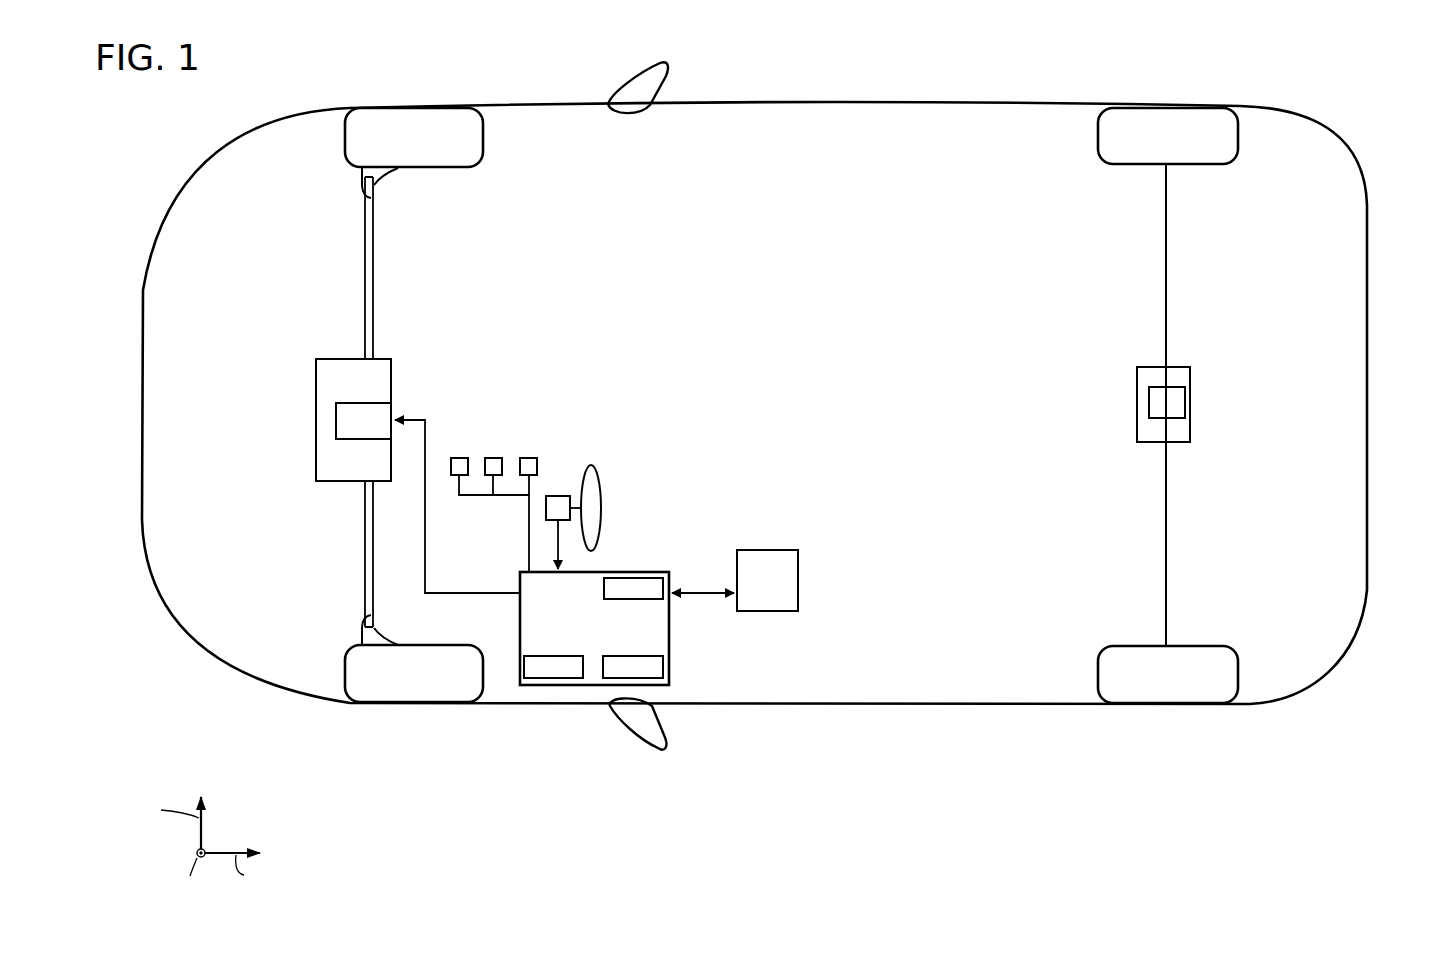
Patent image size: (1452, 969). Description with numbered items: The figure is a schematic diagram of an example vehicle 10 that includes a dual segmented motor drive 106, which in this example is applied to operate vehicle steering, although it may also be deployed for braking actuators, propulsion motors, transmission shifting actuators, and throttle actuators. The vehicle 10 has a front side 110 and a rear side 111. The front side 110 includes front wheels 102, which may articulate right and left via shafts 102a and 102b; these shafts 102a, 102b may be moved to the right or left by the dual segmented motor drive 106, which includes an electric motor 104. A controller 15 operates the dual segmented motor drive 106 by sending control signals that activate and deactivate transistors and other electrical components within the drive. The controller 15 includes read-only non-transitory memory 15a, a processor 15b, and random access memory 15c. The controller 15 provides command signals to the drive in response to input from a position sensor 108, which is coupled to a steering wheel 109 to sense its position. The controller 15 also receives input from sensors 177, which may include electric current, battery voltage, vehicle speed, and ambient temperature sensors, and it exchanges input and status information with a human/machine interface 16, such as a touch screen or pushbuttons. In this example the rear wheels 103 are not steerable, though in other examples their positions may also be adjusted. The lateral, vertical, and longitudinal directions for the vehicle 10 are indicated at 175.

The vehicle 10 is at (985, 105).
The controller 15 is at (594, 628).
The read-only memory 15a is at (553, 668).
The processor 15b is at (633, 668).
The random access memory 15c is at (633, 590).
The human/machine interface 16 is at (735, 580).
The front wheels 102 is at (344, 407).
The shaft 102a is at (376, 222).
The shaft 102b is at (376, 605).
The rear wheels 103 is at (1242, 177).
The electric motor 104 is at (363, 421).
The dual segmented motor drive 106 is at (383, 359).
The position sensor 108 is at (556, 496).
The steering wheel 109 is at (588, 466).
The front side 110 is at (113, 200).
The rear side 111 is at (1412, 140).
The direction indicator 175 is at (228, 802).
The sensors 177 is at (490, 440).